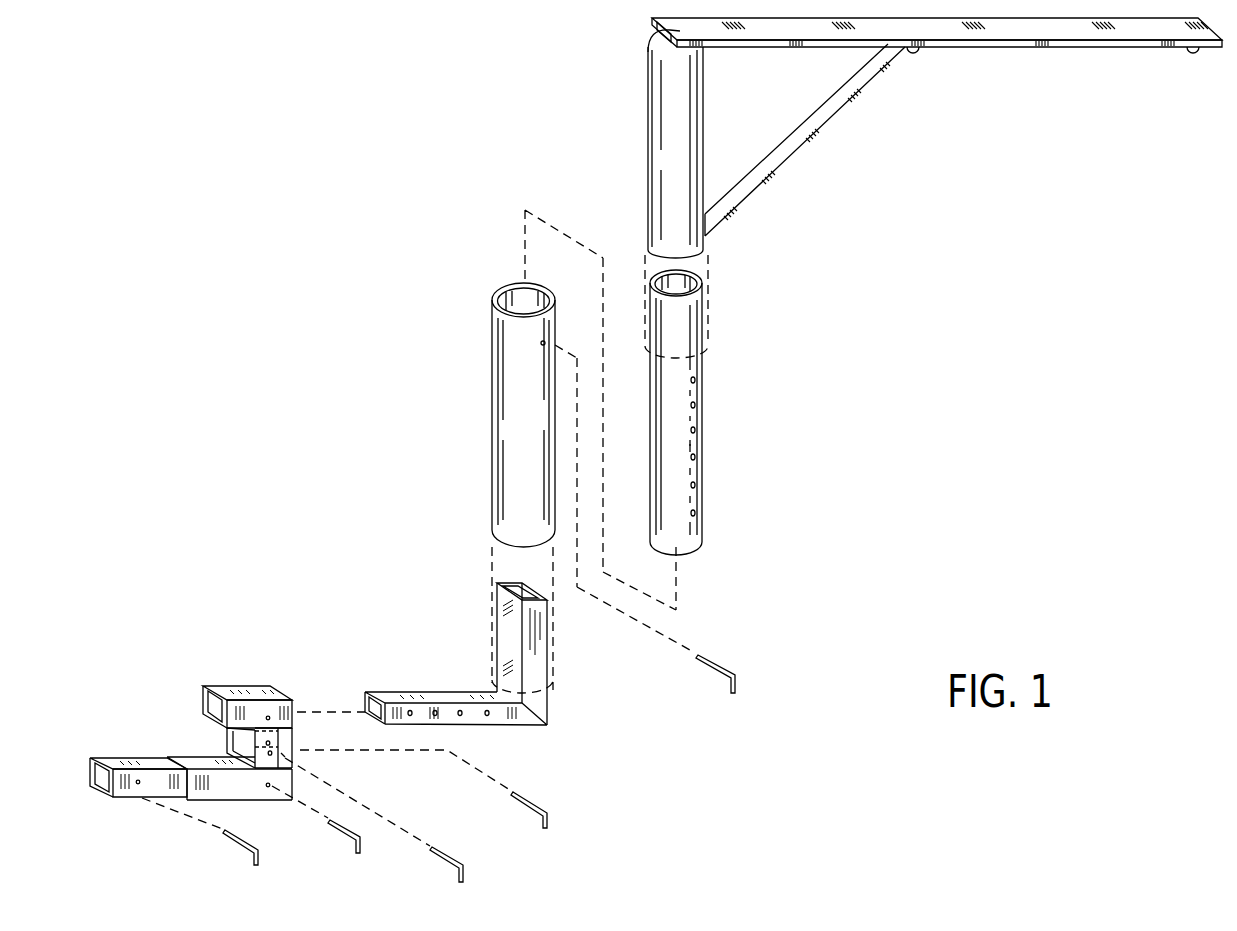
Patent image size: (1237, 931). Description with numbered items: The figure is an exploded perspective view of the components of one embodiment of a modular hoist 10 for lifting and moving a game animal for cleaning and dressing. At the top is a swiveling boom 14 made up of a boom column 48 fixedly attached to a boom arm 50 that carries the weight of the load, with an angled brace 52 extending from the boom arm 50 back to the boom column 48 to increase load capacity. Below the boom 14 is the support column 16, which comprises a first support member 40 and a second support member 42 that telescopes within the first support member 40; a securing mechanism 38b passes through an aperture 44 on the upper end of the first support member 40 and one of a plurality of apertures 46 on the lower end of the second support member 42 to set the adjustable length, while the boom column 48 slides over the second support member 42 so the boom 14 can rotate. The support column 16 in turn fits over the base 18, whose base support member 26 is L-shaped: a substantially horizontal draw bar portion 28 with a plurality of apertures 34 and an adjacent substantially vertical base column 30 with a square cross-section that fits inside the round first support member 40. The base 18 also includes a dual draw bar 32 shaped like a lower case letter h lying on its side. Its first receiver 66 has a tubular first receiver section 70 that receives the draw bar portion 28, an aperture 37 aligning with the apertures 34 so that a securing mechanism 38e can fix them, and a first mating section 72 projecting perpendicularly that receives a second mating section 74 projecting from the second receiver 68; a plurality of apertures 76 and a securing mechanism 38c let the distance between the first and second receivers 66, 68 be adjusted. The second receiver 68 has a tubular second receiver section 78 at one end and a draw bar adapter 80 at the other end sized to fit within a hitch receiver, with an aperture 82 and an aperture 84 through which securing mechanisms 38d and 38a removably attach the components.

The modular hoist 10 is at (1006, 342).
The swiveling boom 14 is at (614, 110).
The support column 16 is at (382, 313).
The base 18 is at (299, 566).
The base support member 26 is at (456, 613).
The draw bar portion 28 is at (437, 695).
The base column 30 is at (535, 653).
The apertures 34 is at (475, 720).
The dual draw bar 32 is at (163, 646).
The aperture 37 is at (271, 715).
The securing mechanism 38a is at (246, 843).
The securing mechanism 38b is at (724, 668).
The securing mechanism 38c is at (462, 855).
The securing mechanism 38d is at (362, 843).
The securing mechanism 38e is at (538, 797).
The first support member 40 is at (522, 435).
The second support member 42 is at (682, 392).
The aperture 44 is at (541, 345).
The apertures 46 is at (699, 448).
The boom column 48 is at (683, 154).
The boom arm 50 is at (1080, 40).
The angled brace 52 is at (788, 152).
The first receiver 66 is at (184, 696).
The second receiver 68 is at (123, 706).
The first receiver section 70 is at (247, 686).
The first mating section 72 is at (284, 743).
The second mating section 74 is at (228, 748).
The apertures 76 is at (290, 758).
The second receiver section 78 is at (234, 787).
The draw bar adapter 80 is at (137, 795).
The aperture 82 is at (272, 787).
The aperture 84 is at (137, 779).